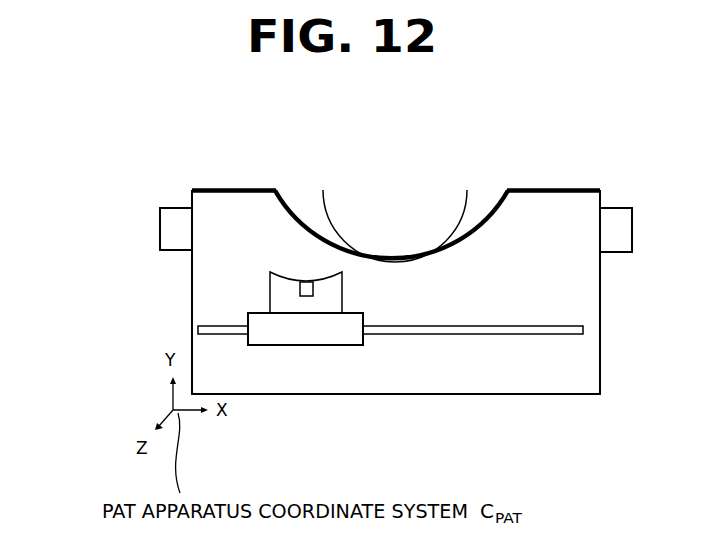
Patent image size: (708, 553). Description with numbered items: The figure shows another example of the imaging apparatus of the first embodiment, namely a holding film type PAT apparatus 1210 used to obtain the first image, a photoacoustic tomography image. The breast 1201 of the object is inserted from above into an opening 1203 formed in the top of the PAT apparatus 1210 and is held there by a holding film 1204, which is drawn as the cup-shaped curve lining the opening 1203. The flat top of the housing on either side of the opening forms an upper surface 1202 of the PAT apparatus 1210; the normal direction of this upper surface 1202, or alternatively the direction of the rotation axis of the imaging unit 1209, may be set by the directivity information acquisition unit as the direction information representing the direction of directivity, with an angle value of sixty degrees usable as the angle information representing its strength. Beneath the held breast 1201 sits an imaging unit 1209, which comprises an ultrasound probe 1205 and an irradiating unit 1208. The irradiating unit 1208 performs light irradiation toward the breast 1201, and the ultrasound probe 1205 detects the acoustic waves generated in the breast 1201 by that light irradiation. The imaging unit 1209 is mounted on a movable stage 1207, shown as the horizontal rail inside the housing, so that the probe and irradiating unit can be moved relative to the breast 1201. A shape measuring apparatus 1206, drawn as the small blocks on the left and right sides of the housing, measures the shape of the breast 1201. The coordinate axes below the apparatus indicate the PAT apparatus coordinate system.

The breast 1201 is at (372, 213).
The upper surface 1202 is at (562, 190).
The opening 1203 is at (483, 207).
The holding film 1204 is at (312, 232).
The ultrasound probe 1205 is at (278, 272).
The shape measuring apparatus 1206 is at (158, 233).
The movable stage 1207 is at (272, 345).
The irradiating unit 1208 is at (305, 296).
The imaging unit 1209 is at (268, 313).
The PAT apparatus 1210 is at (517, 394).